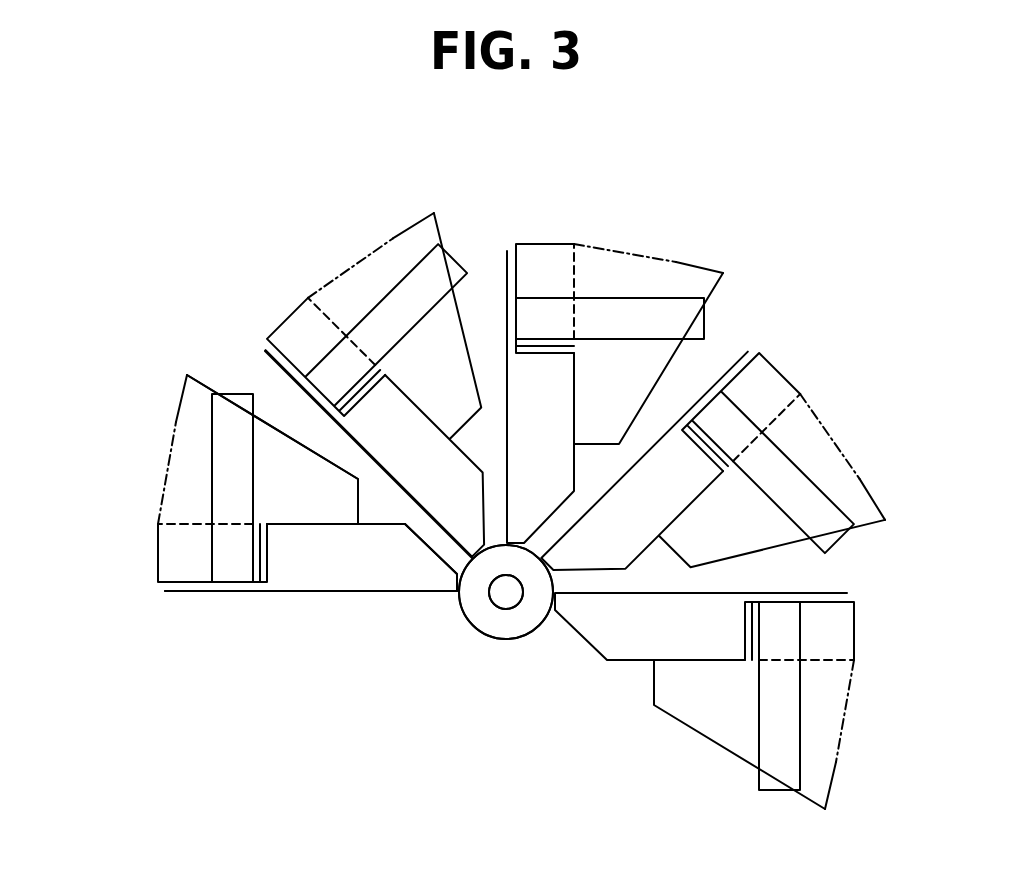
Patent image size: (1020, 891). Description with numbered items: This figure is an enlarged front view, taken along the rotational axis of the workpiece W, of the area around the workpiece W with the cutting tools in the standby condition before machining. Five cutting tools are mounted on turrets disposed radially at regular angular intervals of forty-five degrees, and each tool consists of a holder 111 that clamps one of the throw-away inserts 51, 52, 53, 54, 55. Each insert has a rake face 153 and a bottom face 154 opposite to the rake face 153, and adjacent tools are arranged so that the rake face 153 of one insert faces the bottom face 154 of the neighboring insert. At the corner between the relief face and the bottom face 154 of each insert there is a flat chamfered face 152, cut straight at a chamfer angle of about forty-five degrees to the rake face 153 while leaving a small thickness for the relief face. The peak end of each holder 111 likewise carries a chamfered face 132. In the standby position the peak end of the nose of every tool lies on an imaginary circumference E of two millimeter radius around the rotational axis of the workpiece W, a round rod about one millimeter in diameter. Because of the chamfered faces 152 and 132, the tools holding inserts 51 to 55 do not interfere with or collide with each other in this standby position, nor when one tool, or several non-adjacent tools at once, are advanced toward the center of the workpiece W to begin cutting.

The throw-away insert 51 is at (345, 602).
The throw-away insert 52 is at (412, 452).
The throw-away insert 53 is at (538, 415).
The throw-away insert 54 is at (623, 512).
The throw-away insert 55 is at (653, 620).
The holder 111 is at (343, 282).
The chamfered face 132 is at (272, 426).
The chamfered face 152 is at (438, 542).
The rake face 153 is at (290, 385).
The bottom face 154 is at (380, 520).
The imaginary circumference E is at (505, 638).
The workpiece W is at (510, 603).